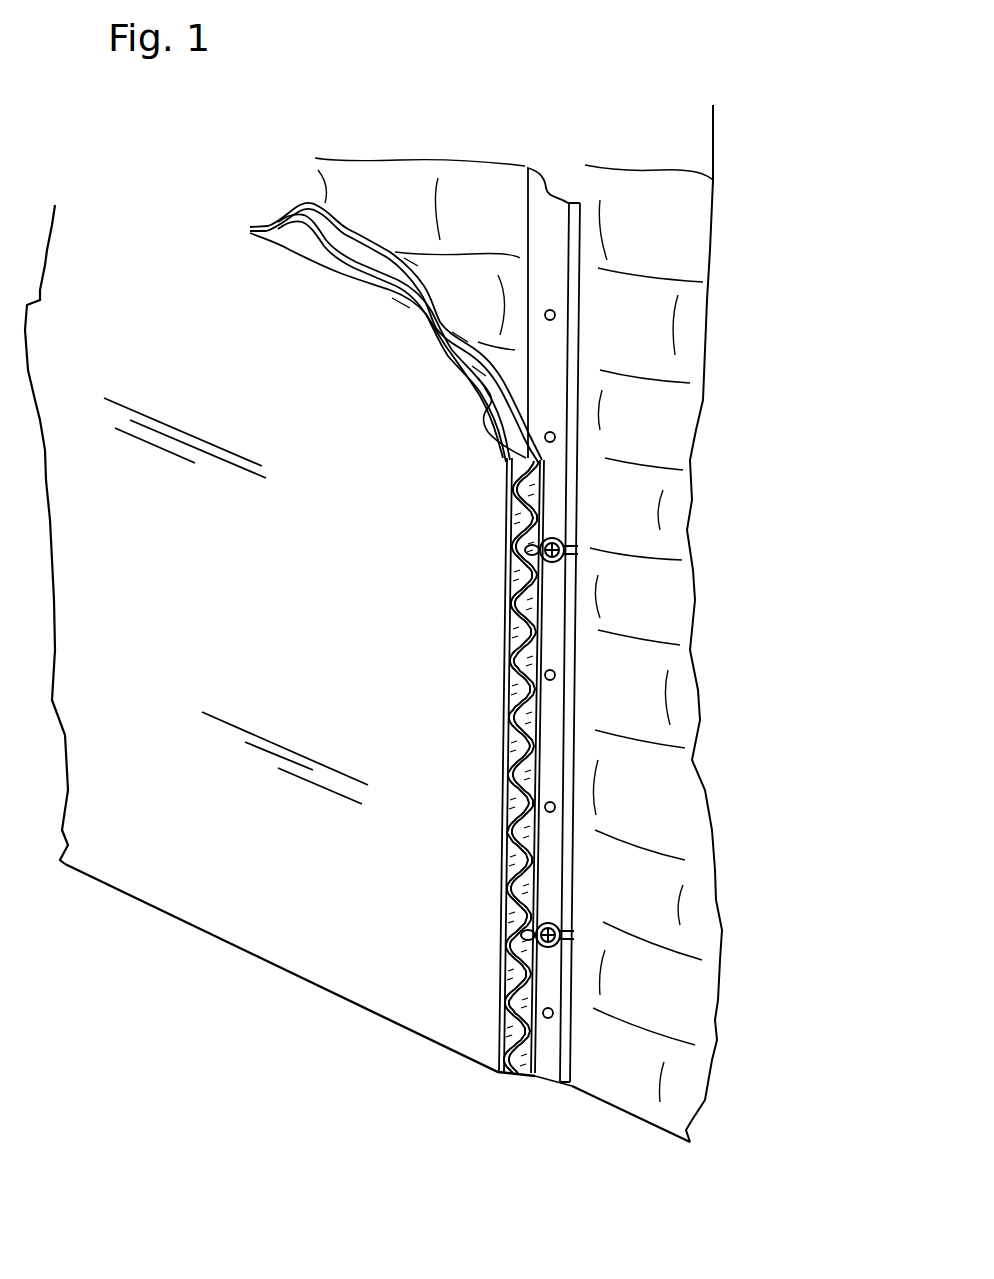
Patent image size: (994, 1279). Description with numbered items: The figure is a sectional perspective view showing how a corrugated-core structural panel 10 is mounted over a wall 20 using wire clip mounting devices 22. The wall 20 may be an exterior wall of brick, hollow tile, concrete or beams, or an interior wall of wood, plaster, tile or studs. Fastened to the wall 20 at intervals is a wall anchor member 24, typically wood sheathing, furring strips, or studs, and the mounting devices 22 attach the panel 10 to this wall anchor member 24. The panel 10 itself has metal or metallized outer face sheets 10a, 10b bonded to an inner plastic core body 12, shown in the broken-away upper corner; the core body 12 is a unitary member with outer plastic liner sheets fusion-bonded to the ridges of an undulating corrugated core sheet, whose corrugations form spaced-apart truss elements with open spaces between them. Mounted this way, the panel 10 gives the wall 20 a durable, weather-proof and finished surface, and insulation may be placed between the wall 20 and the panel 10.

The structural panel 10 is at (232, 892).
The outer face sheet 10a is at (264, 226).
The outer face sheet 10b is at (343, 232).
The inner plastic core body 12 is at (436, 341).
The wall 20 is at (669, 257).
The mounting device 22 is at (549, 536).
The wall anchor member 24 is at (547, 259).